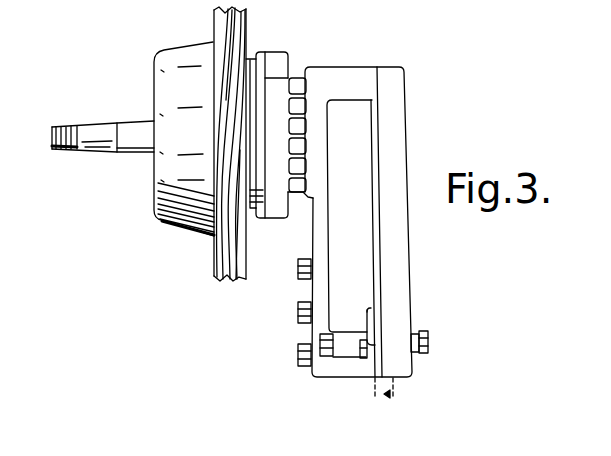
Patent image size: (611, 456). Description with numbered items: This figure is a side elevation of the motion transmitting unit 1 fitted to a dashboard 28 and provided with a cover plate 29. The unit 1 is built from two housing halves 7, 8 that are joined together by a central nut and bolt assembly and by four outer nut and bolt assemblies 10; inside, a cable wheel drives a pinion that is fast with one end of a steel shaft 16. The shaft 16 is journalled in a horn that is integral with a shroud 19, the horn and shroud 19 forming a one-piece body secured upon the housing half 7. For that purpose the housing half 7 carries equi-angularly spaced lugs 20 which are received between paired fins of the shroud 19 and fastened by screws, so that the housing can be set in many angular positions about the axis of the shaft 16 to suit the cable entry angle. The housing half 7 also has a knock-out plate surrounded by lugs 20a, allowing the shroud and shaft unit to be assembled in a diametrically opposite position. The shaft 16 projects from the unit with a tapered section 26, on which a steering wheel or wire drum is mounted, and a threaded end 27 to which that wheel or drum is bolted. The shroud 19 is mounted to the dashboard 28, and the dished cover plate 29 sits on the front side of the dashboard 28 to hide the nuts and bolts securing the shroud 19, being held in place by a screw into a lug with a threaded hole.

The outer nut and bolt assemblies 10 is at (0, 19).
The motion transmitting unit 1 is at (405, 128).
The housing half 7 is at (328, 371).
The housing half 8 is at (393, 296).
The steel shaft 16 is at (131, 128).
The shroud 19 is at (272, 50).
The lugs 20 is at (292, 71).
The lugs 20a is at (300, 314).
The tapered section 26 is at (100, 143).
The threaded end 27 is at (62, 153).
The dashboard 28 is at (223, 268).
The cover plate 29 is at (190, 215).